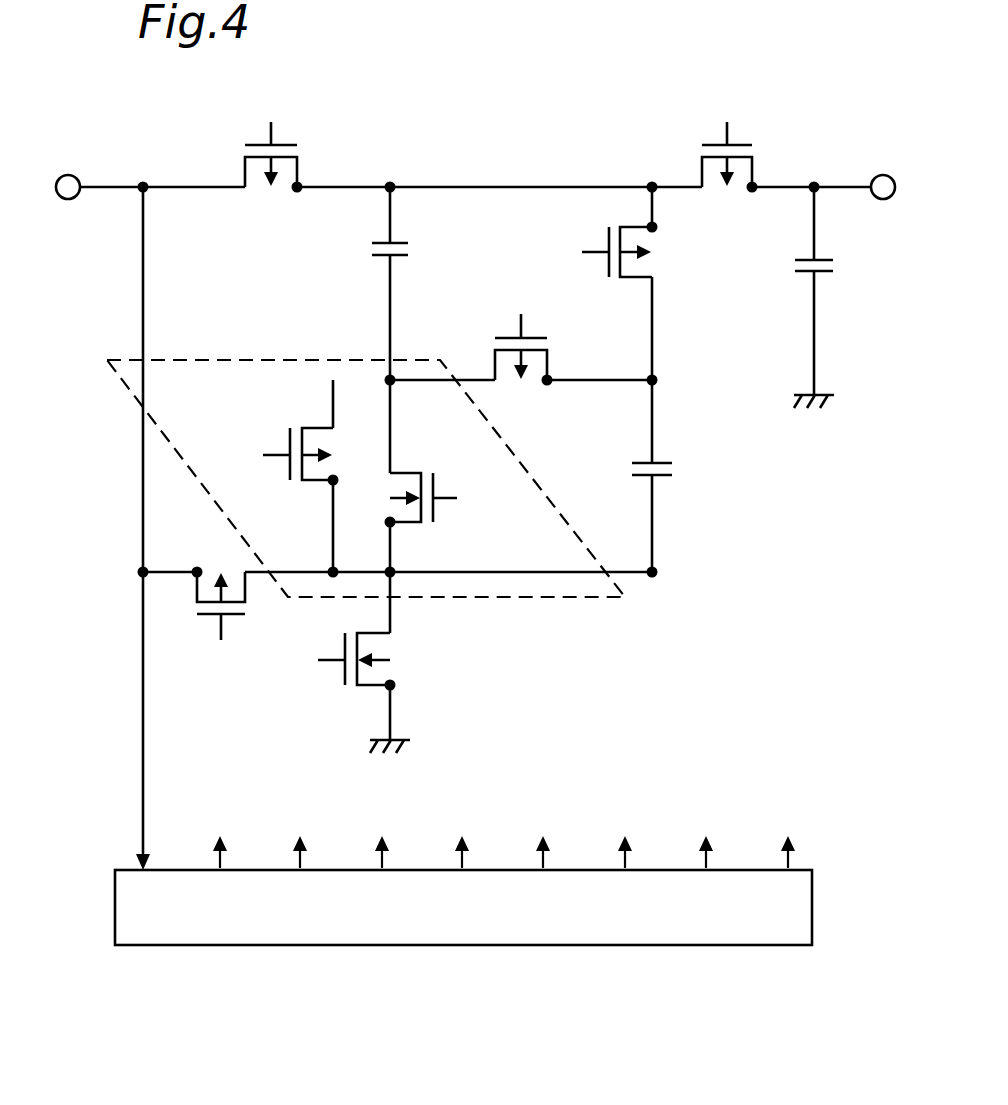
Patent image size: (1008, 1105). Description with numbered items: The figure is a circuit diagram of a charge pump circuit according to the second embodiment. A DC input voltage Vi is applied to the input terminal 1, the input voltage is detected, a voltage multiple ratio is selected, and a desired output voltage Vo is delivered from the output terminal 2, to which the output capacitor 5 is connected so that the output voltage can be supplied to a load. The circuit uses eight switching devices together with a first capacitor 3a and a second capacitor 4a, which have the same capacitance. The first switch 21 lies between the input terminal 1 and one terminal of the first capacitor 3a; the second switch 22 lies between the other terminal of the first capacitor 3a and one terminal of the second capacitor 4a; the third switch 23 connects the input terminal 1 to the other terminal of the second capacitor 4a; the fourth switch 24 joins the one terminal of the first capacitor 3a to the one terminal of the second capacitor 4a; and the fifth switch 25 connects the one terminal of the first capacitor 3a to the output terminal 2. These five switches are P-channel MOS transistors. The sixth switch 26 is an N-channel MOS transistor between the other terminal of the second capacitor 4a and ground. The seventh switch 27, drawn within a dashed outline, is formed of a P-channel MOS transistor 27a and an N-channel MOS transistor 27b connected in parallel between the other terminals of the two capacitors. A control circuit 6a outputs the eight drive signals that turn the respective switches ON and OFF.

The input terminal 1 is at (68, 175).
The output terminal 2 is at (883, 175).
The first capacitor 3a is at (371, 258).
The second capacitor 4a is at (674, 468).
The output capacitor 5 is at (835, 264).
The control circuit 6a is at (114, 890).
The first switch 21 is at (302, 170).
The second switch 22 is at (521, 386).
The third switch 23 is at (216, 572).
The fourth switch 24 is at (654, 258).
The fifth switch 25 is at (700, 152).
The sixth switch 26 is at (393, 648).
The seventh switch 27 is at (583, 599).
The P-channel MOS transistor 27a is at (289, 432).
The N-channel MOS transistor 27b is at (435, 512).